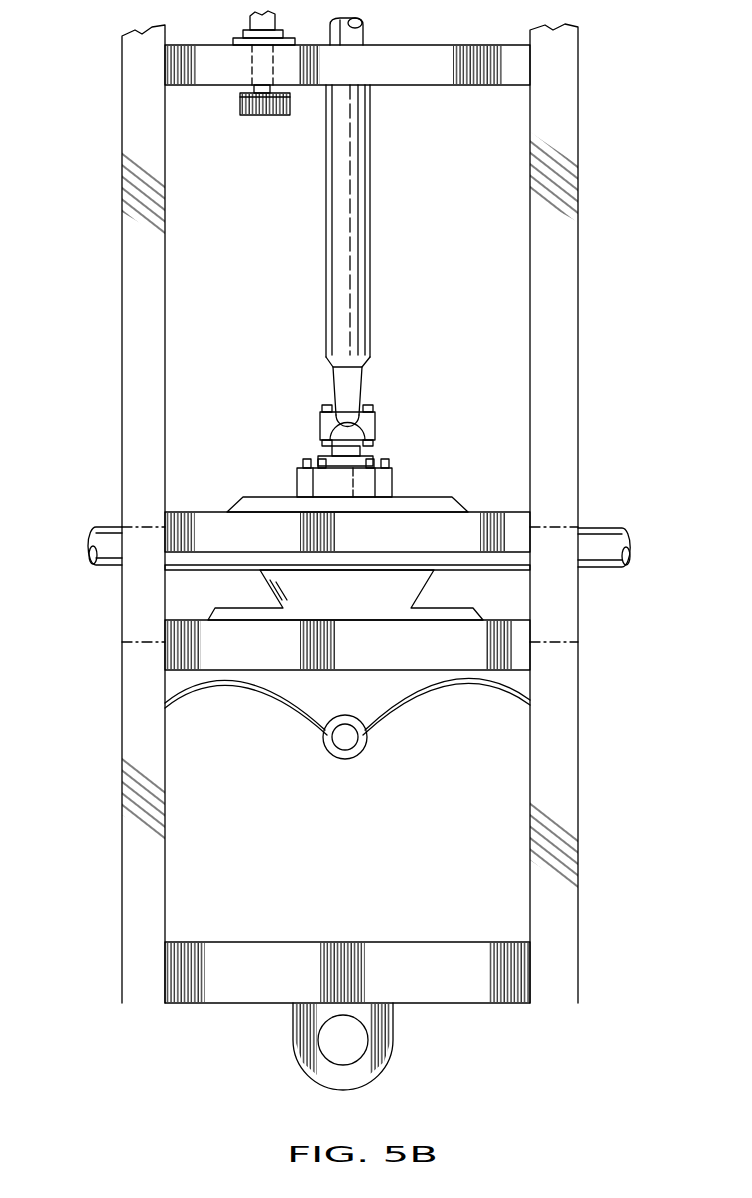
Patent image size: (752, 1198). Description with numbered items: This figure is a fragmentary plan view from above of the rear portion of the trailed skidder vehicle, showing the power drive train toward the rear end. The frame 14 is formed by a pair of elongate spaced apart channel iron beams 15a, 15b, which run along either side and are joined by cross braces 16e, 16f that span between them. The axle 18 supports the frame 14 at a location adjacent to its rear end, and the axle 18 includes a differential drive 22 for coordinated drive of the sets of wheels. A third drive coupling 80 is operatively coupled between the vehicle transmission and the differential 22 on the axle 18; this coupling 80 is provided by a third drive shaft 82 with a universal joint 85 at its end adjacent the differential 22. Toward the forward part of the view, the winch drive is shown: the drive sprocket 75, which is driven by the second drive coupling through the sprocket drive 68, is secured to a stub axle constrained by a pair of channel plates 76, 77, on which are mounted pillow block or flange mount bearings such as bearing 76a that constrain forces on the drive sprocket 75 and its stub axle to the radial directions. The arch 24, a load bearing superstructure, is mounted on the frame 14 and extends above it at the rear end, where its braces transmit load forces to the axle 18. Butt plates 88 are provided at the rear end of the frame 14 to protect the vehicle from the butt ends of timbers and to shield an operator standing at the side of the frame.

The elongated frame 14 is at (348, 557).
The channel iron beam 15a is at (578, 160).
The channel iron beam 15b is at (122, 222).
The cross brace 16e is at (408, 86).
The cross brace 16f is at (326, 671).
The axle 18 is at (107, 526).
The differential drive 22 is at (440, 578).
The arch 24 is at (118, 752).
The sprocket drive 68 is at (257, 122).
The drive sprocket 75 is at (291, 104).
The channel plate 76 is at (322, 45).
The pillow block bearing 76a is at (235, 64).
The channel plate 77 is at (218, 85).
The third drive coupling 80 is at (347, 298).
The third drive shaft 82 is at (326, 232).
The universal joint 85 is at (377, 419).
The butt plates 88 is at (432, 722).